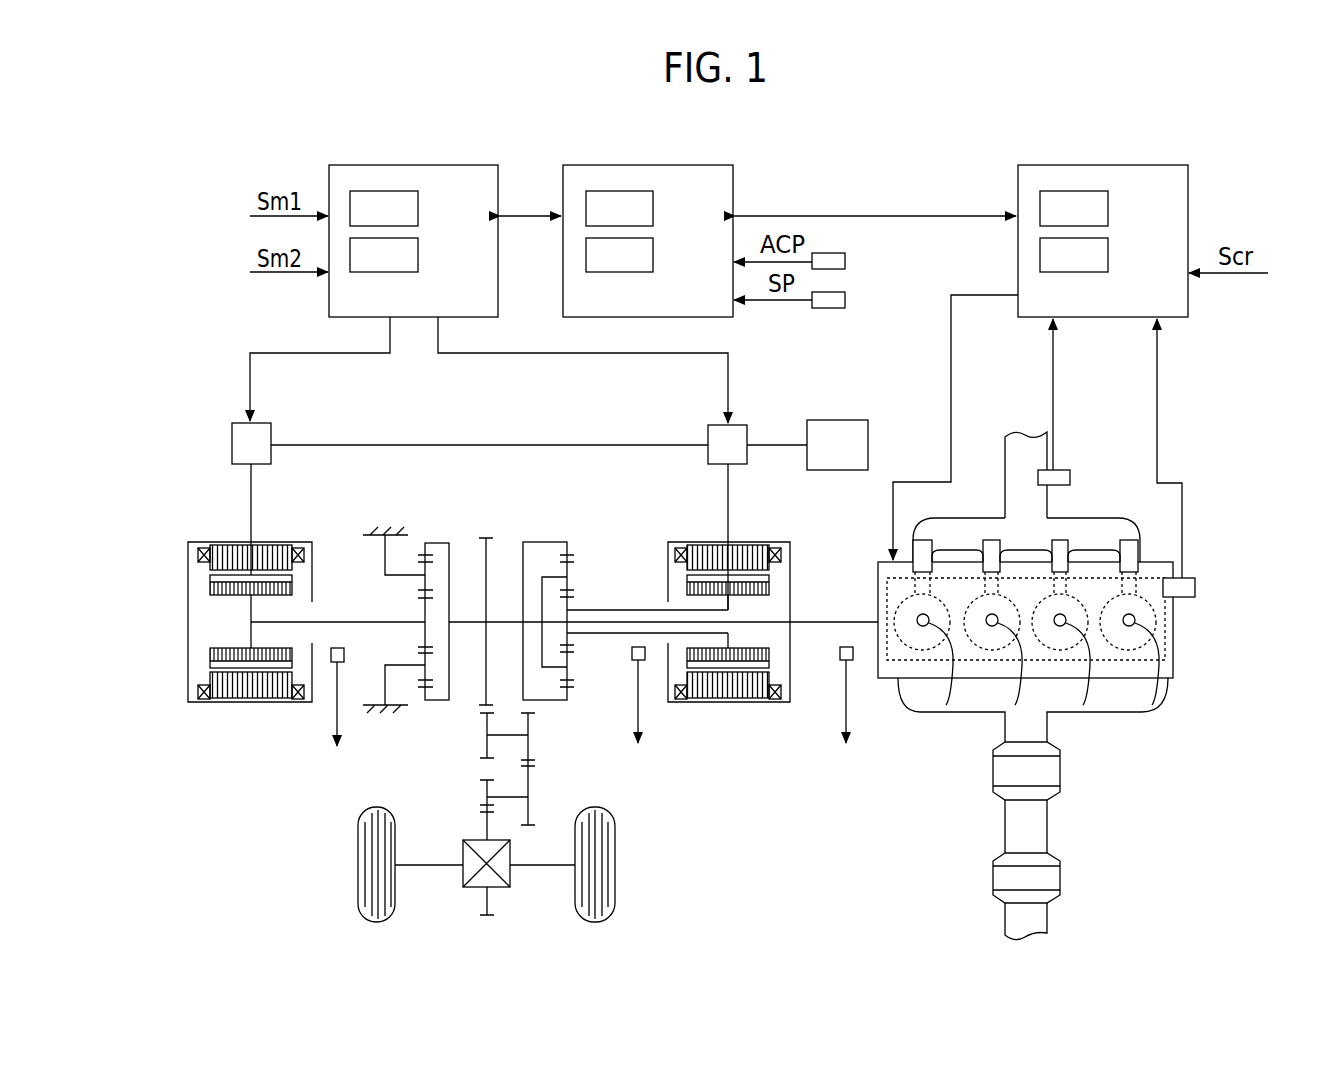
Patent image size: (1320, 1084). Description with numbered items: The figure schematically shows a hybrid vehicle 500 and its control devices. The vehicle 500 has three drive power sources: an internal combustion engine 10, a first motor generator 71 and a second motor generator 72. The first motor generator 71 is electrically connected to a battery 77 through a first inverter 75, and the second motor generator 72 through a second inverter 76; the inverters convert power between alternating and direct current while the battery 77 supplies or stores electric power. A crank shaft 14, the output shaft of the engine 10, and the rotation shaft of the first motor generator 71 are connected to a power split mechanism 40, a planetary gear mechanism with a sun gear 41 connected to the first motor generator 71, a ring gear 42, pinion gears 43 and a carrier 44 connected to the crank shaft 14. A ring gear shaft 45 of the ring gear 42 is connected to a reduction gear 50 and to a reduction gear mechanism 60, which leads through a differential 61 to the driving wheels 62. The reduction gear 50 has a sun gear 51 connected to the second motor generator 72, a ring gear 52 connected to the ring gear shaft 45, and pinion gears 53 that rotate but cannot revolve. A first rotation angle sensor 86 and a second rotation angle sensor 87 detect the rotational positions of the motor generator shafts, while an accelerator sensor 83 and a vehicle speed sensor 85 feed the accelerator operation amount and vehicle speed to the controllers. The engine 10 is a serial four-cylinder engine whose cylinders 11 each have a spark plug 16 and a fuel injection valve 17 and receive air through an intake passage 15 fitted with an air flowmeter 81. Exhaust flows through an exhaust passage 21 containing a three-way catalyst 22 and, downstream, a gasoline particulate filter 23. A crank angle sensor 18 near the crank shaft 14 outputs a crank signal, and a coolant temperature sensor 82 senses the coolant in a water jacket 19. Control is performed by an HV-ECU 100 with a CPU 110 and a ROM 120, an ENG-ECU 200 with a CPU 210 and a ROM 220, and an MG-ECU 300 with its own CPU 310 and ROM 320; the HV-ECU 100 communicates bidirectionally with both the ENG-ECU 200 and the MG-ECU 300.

The internal combustion engine 10 is at (1065, 684).
The cylinder 11 is at (920, 650).
The crank shaft 14 is at (848, 620).
The intake passage 15 is at (1026, 512).
The spark plug 16 is at (949, 706).
The fuel injection valve 17 is at (988, 540).
The crank angle sensor 18 is at (854, 664).
The water jacket 19 is at (1173, 648).
The exhaust passage 21 is at (1004, 821).
The three-way catalyst 22 is at (993, 770).
The gasoline particulate filter 23 is at (993, 880).
The power split mechanism 40 is at (574, 604).
The sun gear 41 is at (572, 595).
The ring gear 42 is at (572, 556).
The pinion gear 43 is at (575, 655).
The carrier 44 is at (561, 686).
The ring gear shaft 45 is at (495, 620).
The reduction gear 50 is at (378, 613).
The sun gear 51 is at (418, 609).
The ring gear 52 is at (426, 544).
The pinion gear 53 is at (423, 688).
The reduction gear mechanism 60 is at (554, 769).
The differential 61 is at (470, 888).
The driving wheel 62 is at (358, 879).
The first motor generator 71 is at (790, 542).
The second motor generator 72 is at (188, 637).
The first inverter 75 is at (708, 467).
The second inverter 76 is at (231, 451).
The battery 77 is at (868, 442).
The air flowmeter 81 is at (1074, 478).
The coolant temperature sensor 82 is at (1197, 588).
The accelerator sensor 83 is at (847, 260).
The vehicle speed sensor 85 is at (847, 298).
The first rotation angle sensor 86 is at (646, 658).
The second rotation angle sensor 87 is at (346, 655).
The HV-ECU 100 is at (600, 165).
The CPU 110 is at (653, 205).
The ROM 120 is at (653, 254).
The ENG-ECU 200 is at (1054, 165).
The CPU 210 is at (1108, 205).
The ROM 220 is at (1108, 254).
The MG-ECU 300 is at (365, 165).
The CPU of MG-ECU 310 is at (418, 205).
The ROM of MG-ECU 320 is at (418, 254).
The hybrid vehicle 500 is at (769, 724).